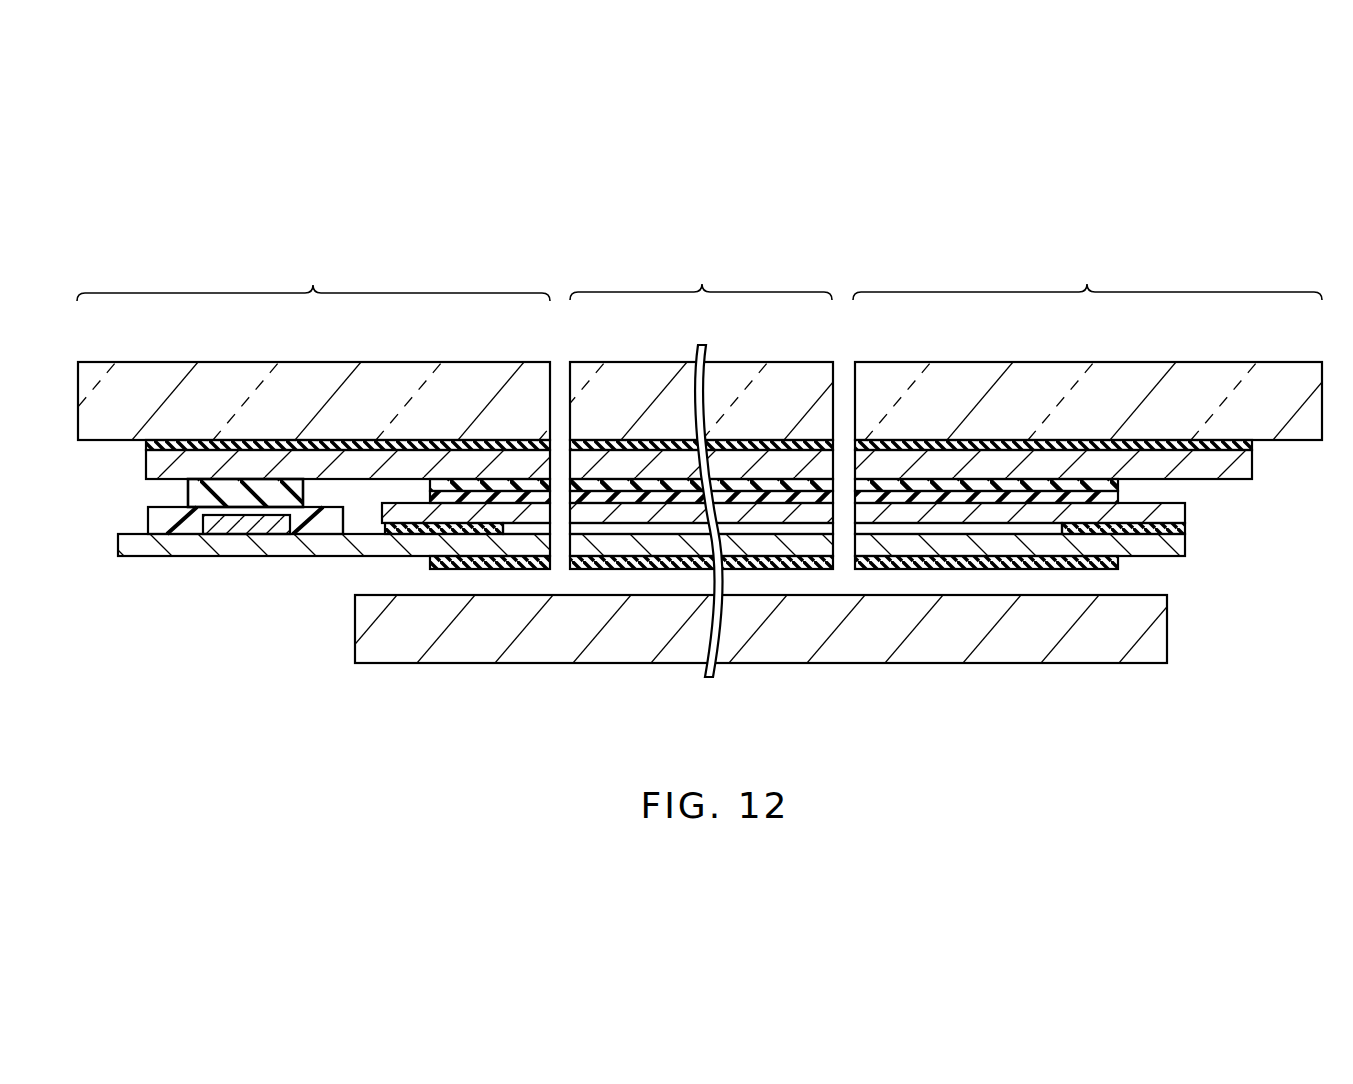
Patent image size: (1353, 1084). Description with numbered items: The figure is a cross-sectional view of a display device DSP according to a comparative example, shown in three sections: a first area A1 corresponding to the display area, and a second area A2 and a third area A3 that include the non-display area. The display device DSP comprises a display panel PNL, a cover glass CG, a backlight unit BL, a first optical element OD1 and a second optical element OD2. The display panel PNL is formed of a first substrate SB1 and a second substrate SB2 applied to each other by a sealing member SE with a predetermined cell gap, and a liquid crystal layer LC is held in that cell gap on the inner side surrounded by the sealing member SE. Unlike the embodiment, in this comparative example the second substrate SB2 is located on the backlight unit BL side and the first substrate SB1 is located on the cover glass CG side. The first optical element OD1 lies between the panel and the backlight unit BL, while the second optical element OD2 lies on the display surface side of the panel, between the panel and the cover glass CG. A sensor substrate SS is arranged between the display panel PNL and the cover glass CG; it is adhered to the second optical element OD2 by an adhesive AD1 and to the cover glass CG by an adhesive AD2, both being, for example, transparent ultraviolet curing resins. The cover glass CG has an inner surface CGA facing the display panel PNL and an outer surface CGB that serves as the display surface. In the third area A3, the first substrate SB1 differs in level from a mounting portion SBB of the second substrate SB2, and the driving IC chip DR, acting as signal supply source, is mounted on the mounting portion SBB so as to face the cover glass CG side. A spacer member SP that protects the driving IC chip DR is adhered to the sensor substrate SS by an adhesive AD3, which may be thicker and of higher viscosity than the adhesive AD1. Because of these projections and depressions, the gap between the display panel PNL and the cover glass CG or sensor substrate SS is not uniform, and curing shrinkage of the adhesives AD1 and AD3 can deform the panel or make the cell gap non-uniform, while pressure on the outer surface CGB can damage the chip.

The display device DSP is at (990, 238).
The display panel PNL is at (1171, 563).
The cover glass CG is at (1137, 370).
The inner surface CGA is at (930, 451).
The outer surface CGB is at (964, 352).
The adhesive AD1 is at (447, 484).
The adhesive AD2 is at (160, 444).
The adhesive AD3 is at (200, 490).
The first optical element OD1 is at (430, 563).
The second optical element OD2 is at (509, 496).
The sensor substrate SS is at (160, 466).
The spacer member SP is at (157, 527).
The driving IC chip DR is at (235, 527).
The mounting portion SBB is at (317, 523).
The first substrate SB1 is at (1180, 512).
The second substrate SB2 is at (1185, 546).
The sealing member SE is at (1180, 526).
The liquid crystal layer LC is at (953, 528).
The backlight unit BL is at (463, 655).
The first area A1 is at (701, 276).
The second area A2 is at (1087, 276).
The third area A3 is at (313, 278).